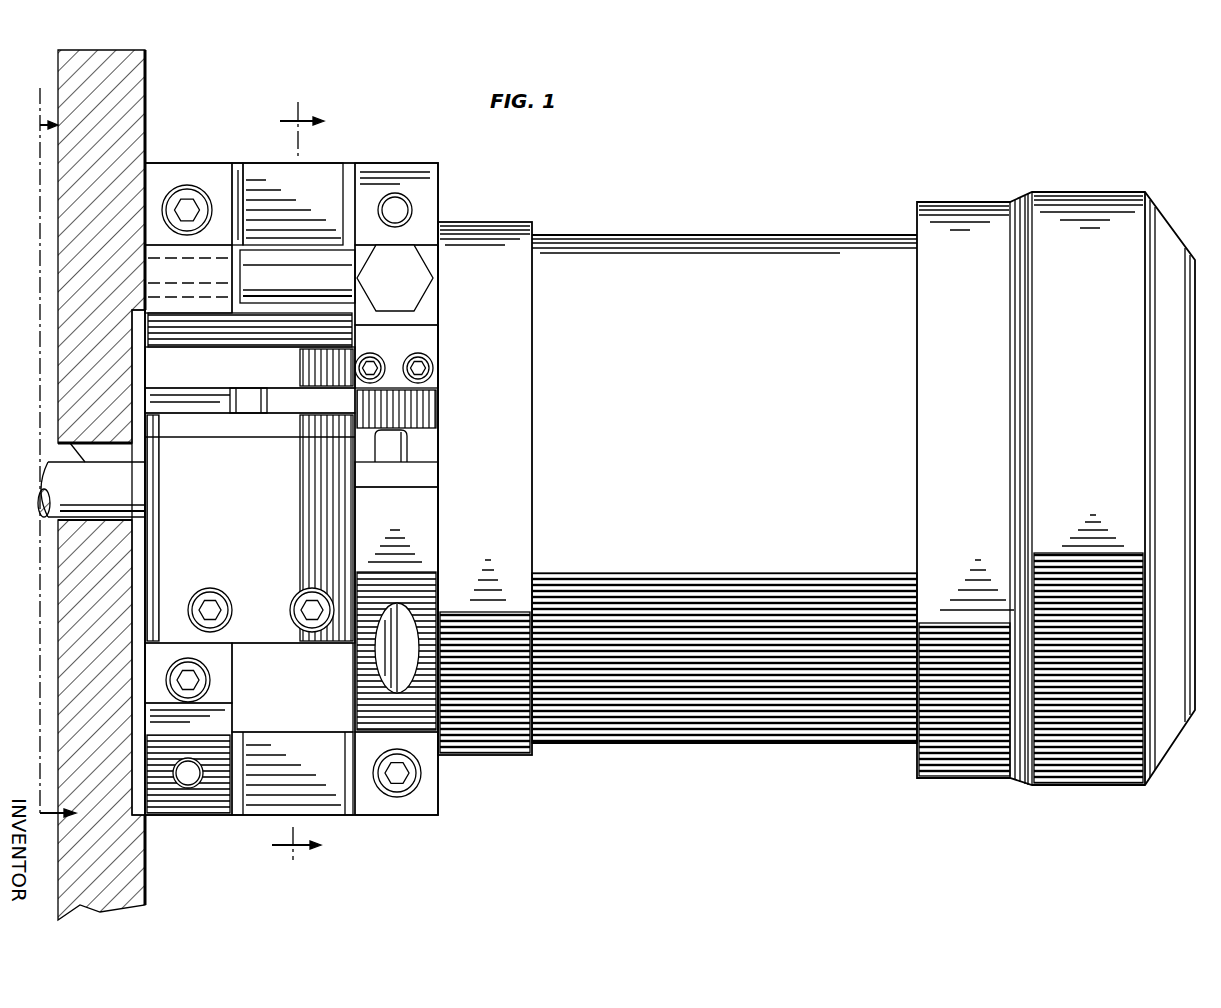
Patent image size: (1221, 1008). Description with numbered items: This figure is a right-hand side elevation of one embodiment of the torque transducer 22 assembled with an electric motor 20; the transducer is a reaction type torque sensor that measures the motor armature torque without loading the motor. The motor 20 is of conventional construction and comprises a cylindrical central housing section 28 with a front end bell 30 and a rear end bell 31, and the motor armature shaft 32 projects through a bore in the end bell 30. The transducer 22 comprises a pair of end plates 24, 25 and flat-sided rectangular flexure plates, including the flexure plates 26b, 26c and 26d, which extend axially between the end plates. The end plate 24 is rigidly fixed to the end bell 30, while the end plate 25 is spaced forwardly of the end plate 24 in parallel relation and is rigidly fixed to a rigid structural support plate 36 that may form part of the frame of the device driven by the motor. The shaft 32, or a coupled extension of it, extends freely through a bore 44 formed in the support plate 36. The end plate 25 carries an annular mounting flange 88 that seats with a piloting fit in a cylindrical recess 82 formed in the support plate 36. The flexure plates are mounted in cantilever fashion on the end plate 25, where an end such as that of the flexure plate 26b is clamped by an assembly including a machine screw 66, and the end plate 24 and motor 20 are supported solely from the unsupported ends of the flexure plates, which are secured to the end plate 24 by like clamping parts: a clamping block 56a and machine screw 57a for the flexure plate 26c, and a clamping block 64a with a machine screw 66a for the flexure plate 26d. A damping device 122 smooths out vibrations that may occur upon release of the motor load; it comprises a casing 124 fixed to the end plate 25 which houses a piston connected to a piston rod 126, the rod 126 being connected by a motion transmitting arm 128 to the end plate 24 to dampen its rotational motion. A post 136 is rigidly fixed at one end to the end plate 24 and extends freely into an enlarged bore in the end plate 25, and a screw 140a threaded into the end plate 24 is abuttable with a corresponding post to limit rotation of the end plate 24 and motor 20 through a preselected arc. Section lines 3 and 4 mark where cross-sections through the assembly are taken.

The section line 3- 3 is at (45, 463).
The section line 4- 4 is at (298, 484).
The electric motor 20 is at (778, 222).
The torque transducer 22 is at (350, 148).
The end plate 24 is at (425, 165).
The end plate 25 is at (165, 817).
The flexure plate 26b is at (260, 165).
The flexure plate 26c is at (365, 488).
The flexure plate 26d is at (333, 817).
The cylindrical central housing section 28 is at (640, 236).
The front end bell 30 is at (500, 222).
The rear end bell 31 is at (976, 202).
The motor armature shaft 32 is at (72, 444).
The support plate 36 is at (147, 94).
The bore 44 is at (85, 462).
The clamping block 56a is at (425, 470).
The machine screw 57a is at (405, 433).
The clamping block 64a is at (413, 805).
The machine screw 66 is at (187, 185).
The machine screw 66a is at (421, 782).
The cylindrical recess 82 is at (132, 556).
The annular mounting flange 88 is at (133, 536).
The damping device 122 is at (272, 652).
The casing 124 is at (244, 532).
The piston rod 126 is at (268, 403).
The motion transmitting arm 128 is at (254, 375).
The post 136 is at (306, 286).
The screw 140a is at (435, 270).